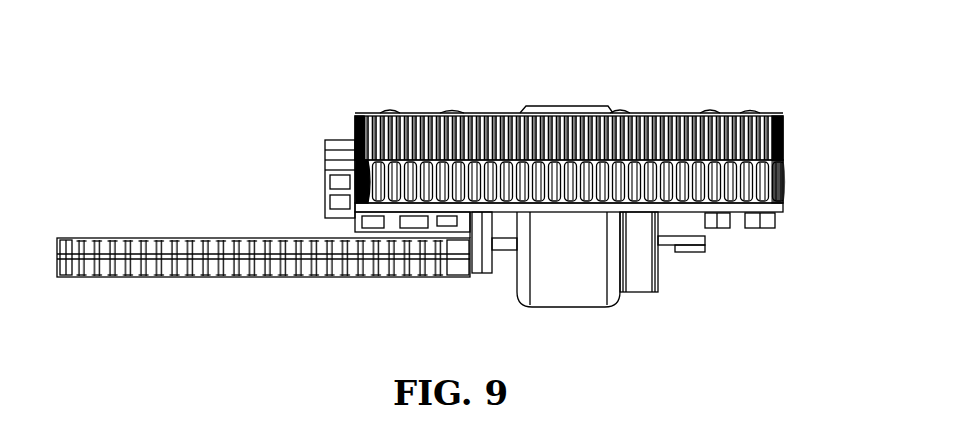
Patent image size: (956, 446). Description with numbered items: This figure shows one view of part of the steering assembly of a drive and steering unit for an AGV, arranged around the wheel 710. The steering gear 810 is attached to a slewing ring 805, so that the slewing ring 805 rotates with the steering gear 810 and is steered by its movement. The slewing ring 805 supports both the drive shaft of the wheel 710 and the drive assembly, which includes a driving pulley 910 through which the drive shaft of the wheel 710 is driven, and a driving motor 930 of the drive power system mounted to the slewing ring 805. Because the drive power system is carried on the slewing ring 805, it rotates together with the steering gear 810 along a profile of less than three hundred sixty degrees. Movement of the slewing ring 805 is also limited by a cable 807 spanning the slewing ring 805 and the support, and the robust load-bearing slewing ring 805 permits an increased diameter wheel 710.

The wheel 710 is at (550, 292).
The slewing ring 805 is at (793, 163).
The cable 807 is at (200, 237).
The steering gear 810 is at (625, 113).
The driving pulley 910 is at (648, 278).
The driving motor 930 is at (335, 148).